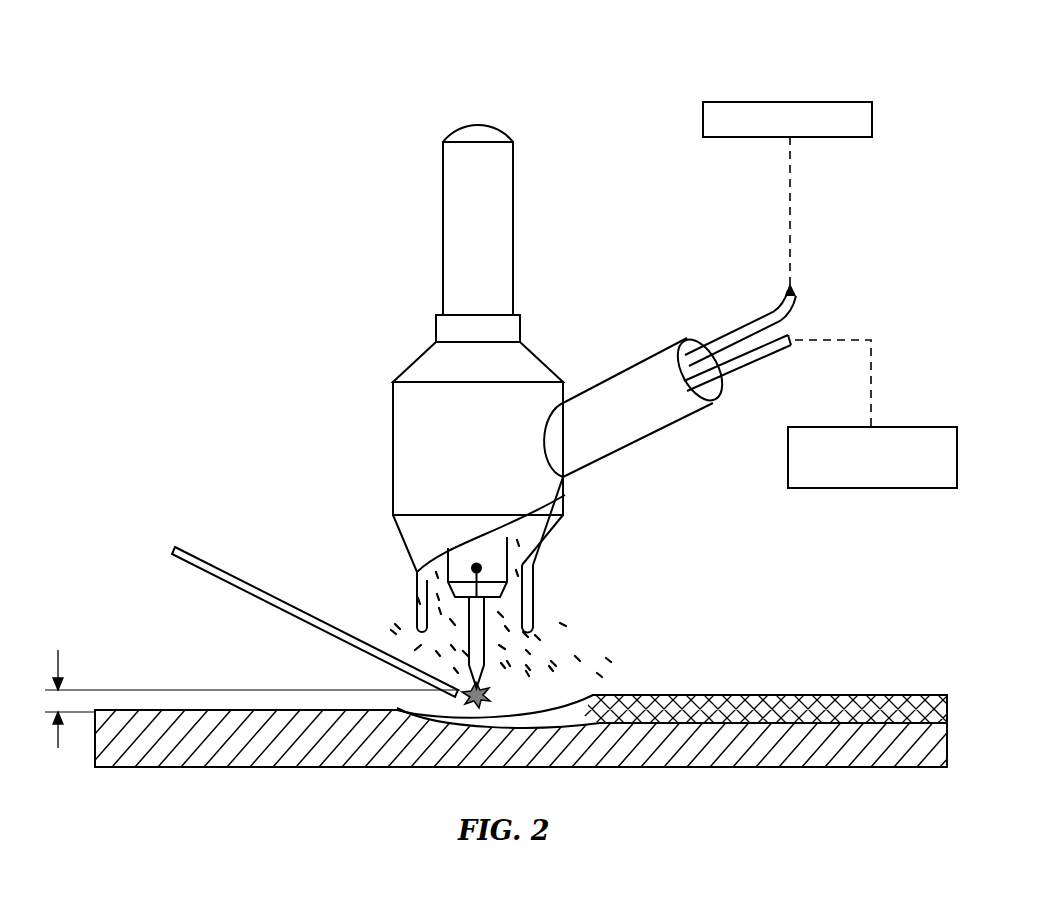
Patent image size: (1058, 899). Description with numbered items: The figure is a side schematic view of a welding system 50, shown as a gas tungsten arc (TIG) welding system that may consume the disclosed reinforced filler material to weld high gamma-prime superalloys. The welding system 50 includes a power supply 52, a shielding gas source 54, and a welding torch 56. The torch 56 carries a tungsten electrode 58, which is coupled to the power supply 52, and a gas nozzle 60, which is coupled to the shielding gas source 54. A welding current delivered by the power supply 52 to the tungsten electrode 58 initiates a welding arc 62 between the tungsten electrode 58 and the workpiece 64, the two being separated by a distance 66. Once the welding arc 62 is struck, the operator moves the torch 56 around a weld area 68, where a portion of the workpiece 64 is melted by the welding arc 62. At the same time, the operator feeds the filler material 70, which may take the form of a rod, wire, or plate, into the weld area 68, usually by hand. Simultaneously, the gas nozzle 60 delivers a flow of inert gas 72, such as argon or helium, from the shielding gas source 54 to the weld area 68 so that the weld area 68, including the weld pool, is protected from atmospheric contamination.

The welding system 50 is at (774, 42).
The power supply 52 is at (786, 106).
The shielding gas source 54 is at (913, 428).
The welding torch 56 is at (582, 311).
The tungsten electrode 58 is at (486, 612).
The gas nozzle 60 is at (418, 600).
The welding arc 62 is at (489, 694).
The workpiece 64 is at (521, 770).
The distance 66 is at (58, 660).
The weld area 68 is at (367, 599).
The filler material 70 is at (236, 580).
The inert gas 72 is at (526, 540).